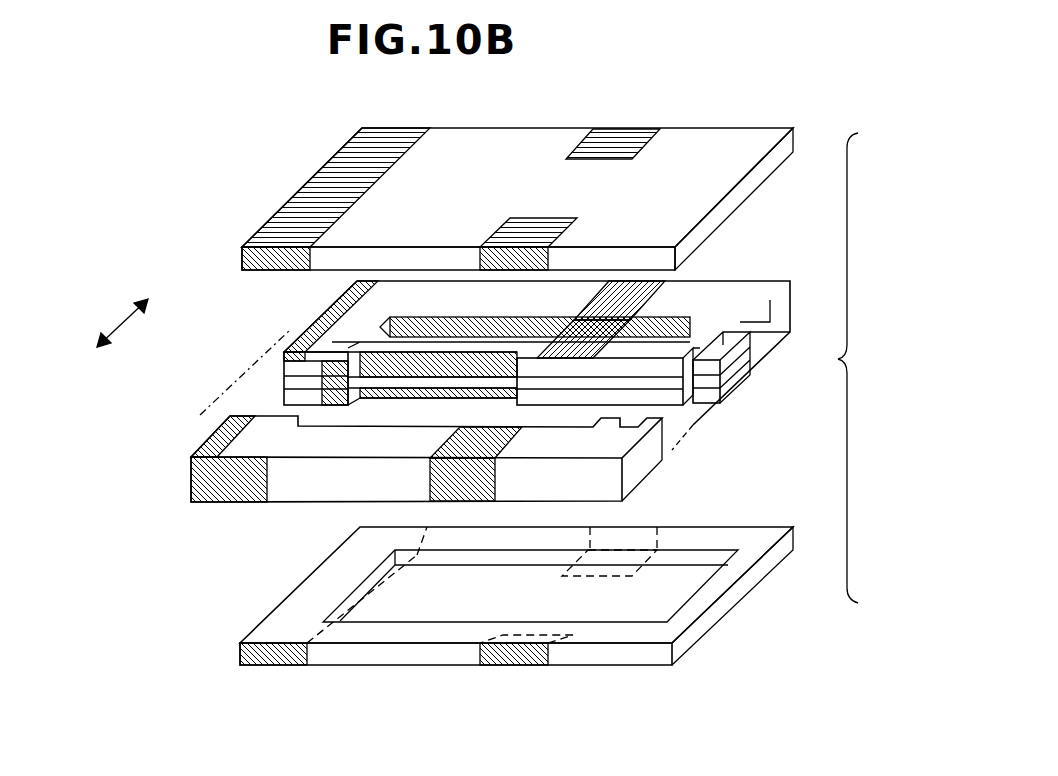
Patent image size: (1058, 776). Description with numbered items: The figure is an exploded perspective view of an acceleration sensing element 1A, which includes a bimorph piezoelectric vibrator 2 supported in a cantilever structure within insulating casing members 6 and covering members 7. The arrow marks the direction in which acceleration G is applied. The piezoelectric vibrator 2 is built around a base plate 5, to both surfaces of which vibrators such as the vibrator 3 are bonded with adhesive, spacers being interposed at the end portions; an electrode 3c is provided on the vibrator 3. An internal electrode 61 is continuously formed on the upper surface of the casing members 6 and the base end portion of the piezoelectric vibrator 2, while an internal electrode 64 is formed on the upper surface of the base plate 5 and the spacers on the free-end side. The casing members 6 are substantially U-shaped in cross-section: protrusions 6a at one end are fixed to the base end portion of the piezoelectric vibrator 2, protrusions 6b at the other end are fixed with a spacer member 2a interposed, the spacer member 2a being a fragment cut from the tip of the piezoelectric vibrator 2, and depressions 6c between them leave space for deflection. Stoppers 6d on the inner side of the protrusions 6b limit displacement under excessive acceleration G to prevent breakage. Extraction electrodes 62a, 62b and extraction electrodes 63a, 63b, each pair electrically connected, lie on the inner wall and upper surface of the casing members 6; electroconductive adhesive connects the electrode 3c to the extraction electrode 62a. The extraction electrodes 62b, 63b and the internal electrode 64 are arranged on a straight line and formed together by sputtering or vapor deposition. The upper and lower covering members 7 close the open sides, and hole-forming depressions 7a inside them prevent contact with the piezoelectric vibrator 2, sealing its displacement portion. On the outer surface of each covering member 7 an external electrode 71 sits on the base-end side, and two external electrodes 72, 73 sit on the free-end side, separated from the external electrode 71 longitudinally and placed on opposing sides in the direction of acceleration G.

The piezoelectric device 1A is at (876, 368).
The bimorph piezoelectric vibrator 2 is at (498, 334).
The spacer member 2a is at (728, 406).
The vibrator 3 is at (434, 384).
The electrode 3c is at (327, 372).
The base plate 5 is at (430, 342).
The casing member 6 is at (329, 505).
The protrusion 6a is at (270, 422).
The protrusion 6b is at (668, 421).
The depression 6c is at (375, 420).
The stopper 6d is at (606, 426).
The internal electrode 61 is at (215, 435).
The extraction electrode 62a is at (432, 420).
The extraction electrode 62b is at (517, 438).
The extraction electrode 63a is at (475, 328).
The extraction electrode 63b is at (685, 282).
The internal electrode 64 is at (534, 344).
The covering member 7 is at (475, 137).
The hole-forming depression 7a is at (673, 595).
The external electrode 71 is at (332, 172).
The external electrode 72 is at (515, 224).
The external electrode 73 is at (613, 138).
The acceleration G is at (119, 320).